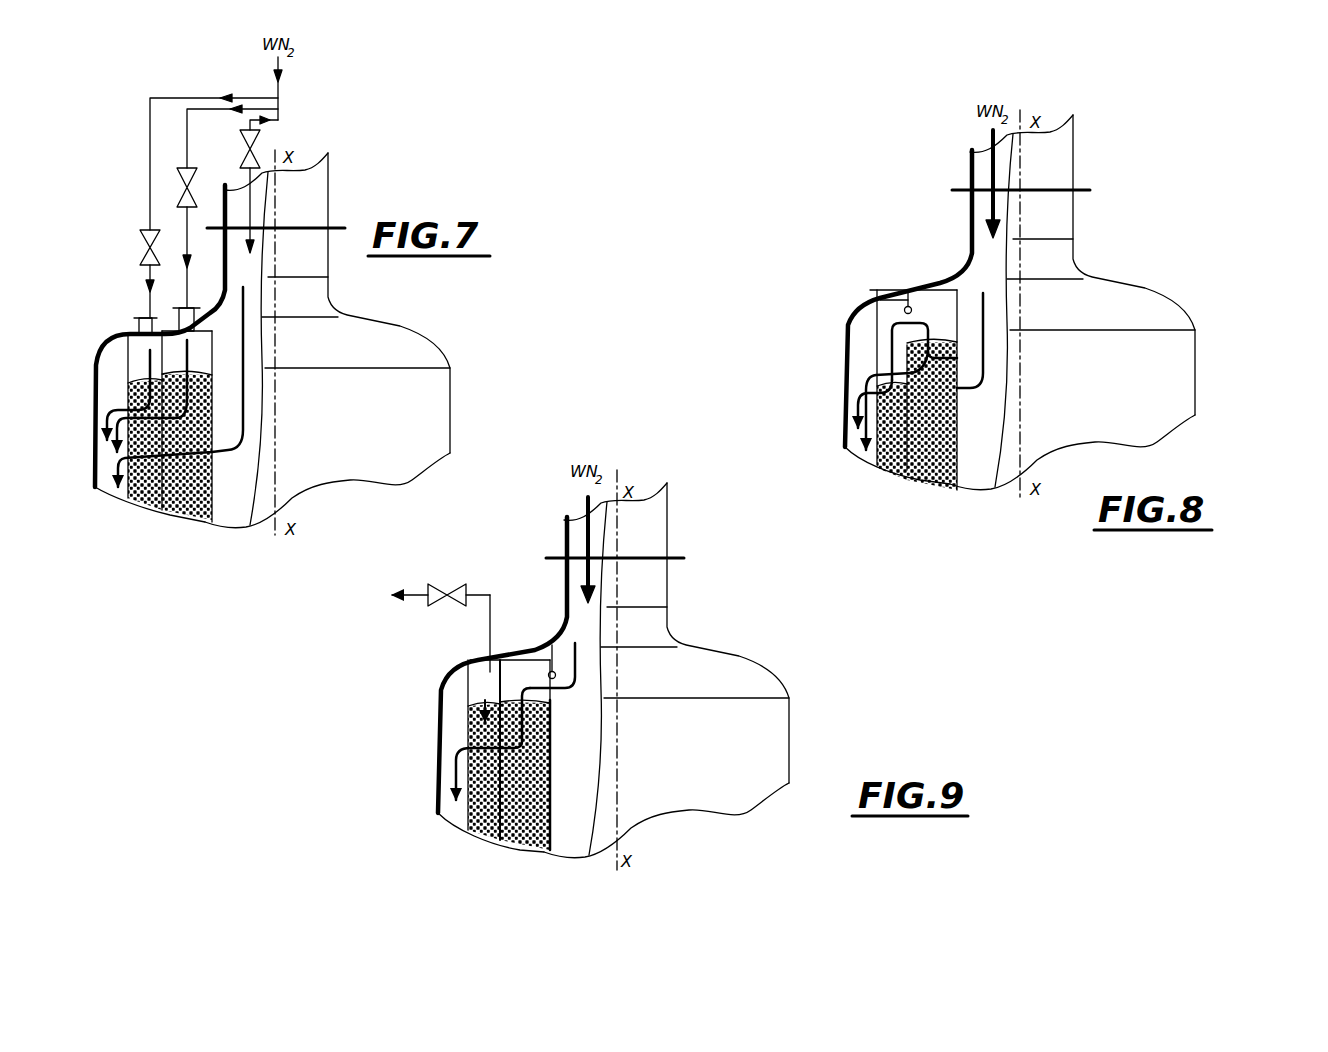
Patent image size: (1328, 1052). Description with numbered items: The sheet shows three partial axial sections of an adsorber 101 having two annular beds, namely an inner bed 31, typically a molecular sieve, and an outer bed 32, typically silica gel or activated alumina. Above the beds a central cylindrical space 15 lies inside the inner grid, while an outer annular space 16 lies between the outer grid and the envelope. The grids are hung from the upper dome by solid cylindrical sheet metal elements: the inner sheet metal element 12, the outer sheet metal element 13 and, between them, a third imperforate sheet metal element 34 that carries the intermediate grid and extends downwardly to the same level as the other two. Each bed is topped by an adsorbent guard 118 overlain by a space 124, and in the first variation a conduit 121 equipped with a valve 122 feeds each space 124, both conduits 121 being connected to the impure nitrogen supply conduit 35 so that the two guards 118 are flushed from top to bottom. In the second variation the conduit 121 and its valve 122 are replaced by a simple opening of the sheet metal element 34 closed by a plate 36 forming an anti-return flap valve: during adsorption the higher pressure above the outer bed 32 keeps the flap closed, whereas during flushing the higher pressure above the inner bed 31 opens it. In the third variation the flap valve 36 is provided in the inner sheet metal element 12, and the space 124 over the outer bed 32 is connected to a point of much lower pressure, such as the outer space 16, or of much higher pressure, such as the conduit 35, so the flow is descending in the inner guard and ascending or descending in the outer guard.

In FIG. 7, the adsorber 101 is at (466, 396).
In FIG. 8, the adsorber 101 is at (1214, 354).
In FIG. 9, the adsorber 101 is at (804, 719).
In FIG. 7, the sheet metal element 12 is at (213, 348).
In FIG. 9, the sheet metal element 12 is at (556, 724).
In FIG. 7, the sheet metal element 13 is at (128, 357).
In FIG. 7, the central cylindrical space 15 is at (234, 458).
In FIG. 8, the central cylindrical space 15 is at (980, 423).
In FIG. 9, the central cylindrical space 15 is at (575, 790).
In FIG. 7, the outer annular space 16 is at (97, 470).
In FIG. 8, the outer annular space 16 is at (848, 450).
In FIG. 9, the outer annular space 16 is at (448, 765).
In FIG. 7, the inner annular bed 31 is at (182, 492).
In FIG. 8, the inner annular bed 31 is at (927, 464).
In FIG. 9, the inner annular bed 31 is at (516, 836).
In FIG. 7, the outer annular bed 32 is at (142, 487).
In FIG. 8, the outer annular bed 32 is at (893, 457).
In FIG. 9, the outer annular bed 32 is at (482, 834).
In FIG. 7, the third sheet metal element 34 is at (150, 370).
In FIG. 8, the third sheet metal element 34 is at (882, 348).
In FIG. 7, the impure nitrogen supply conduit 35 is at (282, 96).
In FIG. 8, the plate 36 is at (862, 312).
In FIG. 9, the plate 36 is at (470, 678).
In FIG. 7, the adsorbent guard 118 is at (176, 392).
In FIG. 8, the adsorbent guard 118 is at (898, 352).
In FIG. 9, the adsorbent guard 118 is at (500, 722).
In FIG. 7, the conduit 121 is at (188, 138).
In FIG. 9, the conduit 121 is at (483, 592).
In FIG. 7, the valve 122 is at (182, 177).
In FIG. 9, the valve 122 is at (432, 598).
In FIG. 8, the space 124 is at (937, 312).
In FIG. 9, the space 124 is at (490, 694).